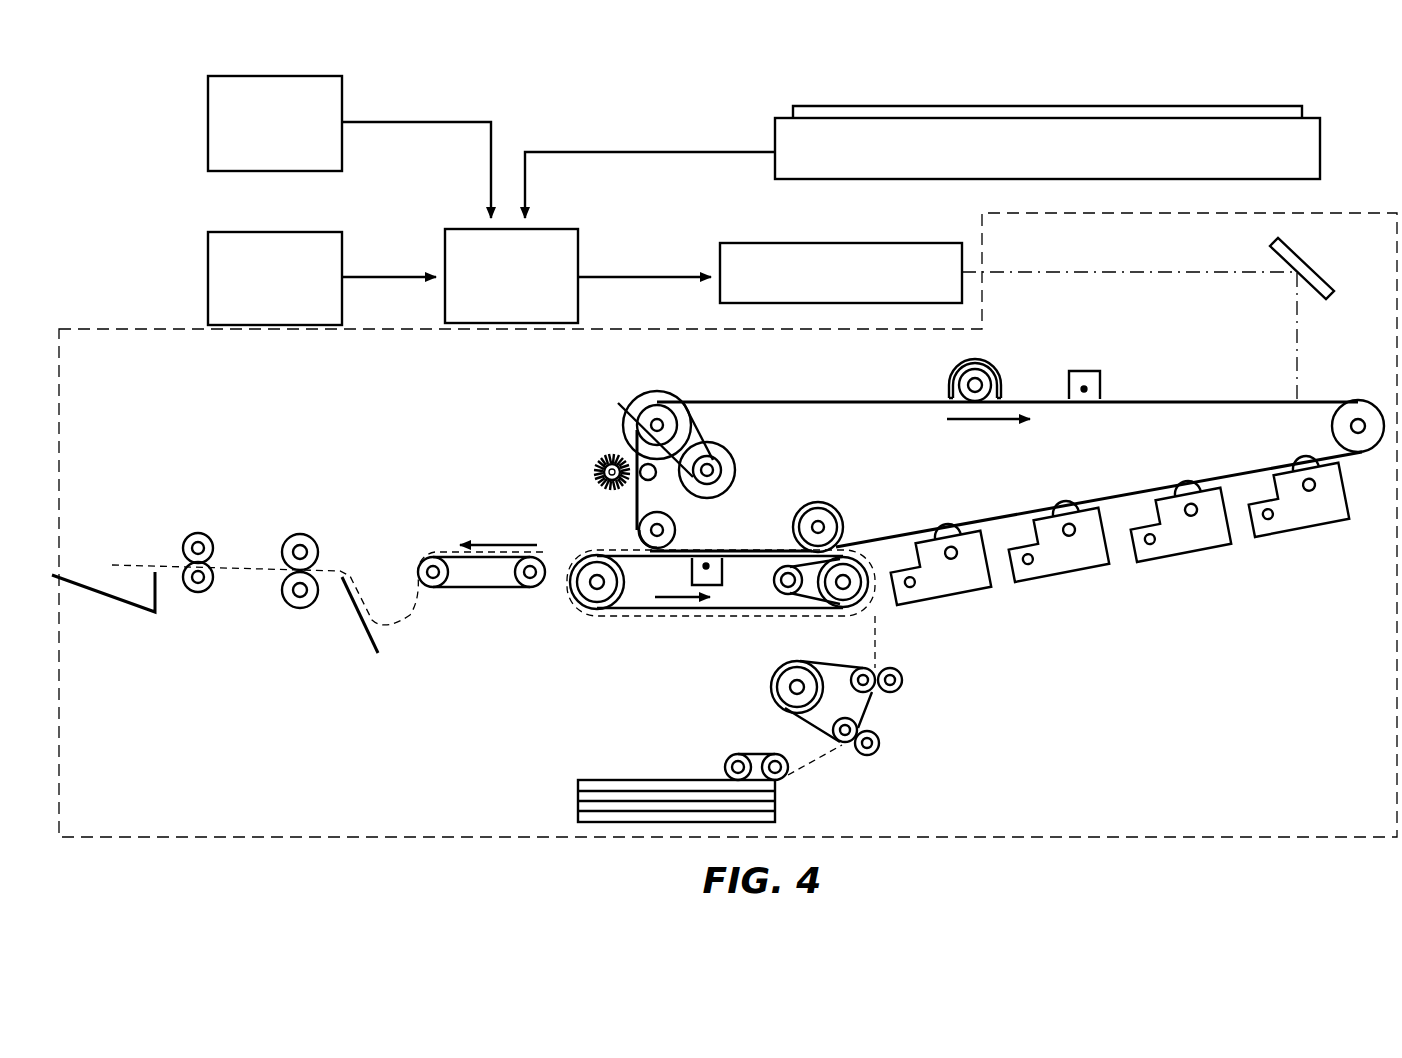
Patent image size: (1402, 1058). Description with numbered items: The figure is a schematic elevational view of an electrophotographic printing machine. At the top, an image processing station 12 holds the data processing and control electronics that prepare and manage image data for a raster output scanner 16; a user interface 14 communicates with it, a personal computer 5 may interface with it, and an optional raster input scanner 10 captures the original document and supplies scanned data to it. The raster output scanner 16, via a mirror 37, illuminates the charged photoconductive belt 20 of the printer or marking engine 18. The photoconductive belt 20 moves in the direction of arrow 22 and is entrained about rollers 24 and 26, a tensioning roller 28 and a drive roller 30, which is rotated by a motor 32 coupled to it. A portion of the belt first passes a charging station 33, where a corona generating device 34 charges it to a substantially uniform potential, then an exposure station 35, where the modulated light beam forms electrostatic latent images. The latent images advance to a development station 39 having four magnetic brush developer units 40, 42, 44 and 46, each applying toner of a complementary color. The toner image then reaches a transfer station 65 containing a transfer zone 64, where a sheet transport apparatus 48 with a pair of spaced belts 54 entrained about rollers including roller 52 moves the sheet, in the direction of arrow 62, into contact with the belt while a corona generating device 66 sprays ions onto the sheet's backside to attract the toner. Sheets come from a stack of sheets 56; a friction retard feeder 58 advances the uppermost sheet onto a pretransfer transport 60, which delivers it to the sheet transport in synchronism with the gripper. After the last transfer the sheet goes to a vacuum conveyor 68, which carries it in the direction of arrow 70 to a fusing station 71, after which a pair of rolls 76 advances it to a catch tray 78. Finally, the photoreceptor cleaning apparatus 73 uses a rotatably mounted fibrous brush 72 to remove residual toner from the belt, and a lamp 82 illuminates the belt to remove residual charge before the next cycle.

The personal computer 5 is at (215, 186).
The user interface 14 is at (318, 216).
The image processing station 12 is at (561, 216).
The raster output scanner 16 is at (877, 215).
The raster input scanner 10 is at (772, 110).
The printer or marking engine 18 is at (1340, 184).
The mirror 37 is at (1294, 252).
The photoconductive belt 20 is at (1212, 398).
The tensioning roller 28 is at (1376, 399).
The drive roller 30 is at (657, 392).
The motor 32 is at (725, 462).
The roller 24 is at (668, 532).
The roller 26 is at (845, 530).
The fibrous brush 72 is at (598, 470).
The photoreceptor cleaning apparatus 73 is at (592, 441).
The lamp 82 is at (998, 373).
The corona generating device 34 is at (1089, 370).
The charging station 33 is at (1120, 394).
The exposure station 35 is at (1280, 393).
The arrow 22 is at (976, 423).
The developer unit 46 is at (942, 590).
The developer unit 44 is at (1060, 565).
The developer unit 42 is at (1180, 545).
The developer unit 40 is at (1295, 520).
The development station 39 is at (1172, 664).
The belts 54 is at (752, 613).
The sheet transport apparatus 48 is at (616, 636).
The corona generating device 66 is at (692, 566).
The roller 52 is at (856, 609).
The transfer zone 64 is at (719, 536).
The transfer station 65 is at (732, 569).
The arrow 62 is at (683, 603).
The stack of sheets 56 is at (625, 778).
The friction retard feeder 58 is at (770, 752).
The pretransfer transport 60 is at (872, 703).
The vacuum conveyor 68 is at (490, 592).
The arrow 70 is at (500, 540).
The fusing station 71 is at (321, 504).
The pair of rolls 76 is at (200, 545).
The catch tray 78 is at (128, 607).